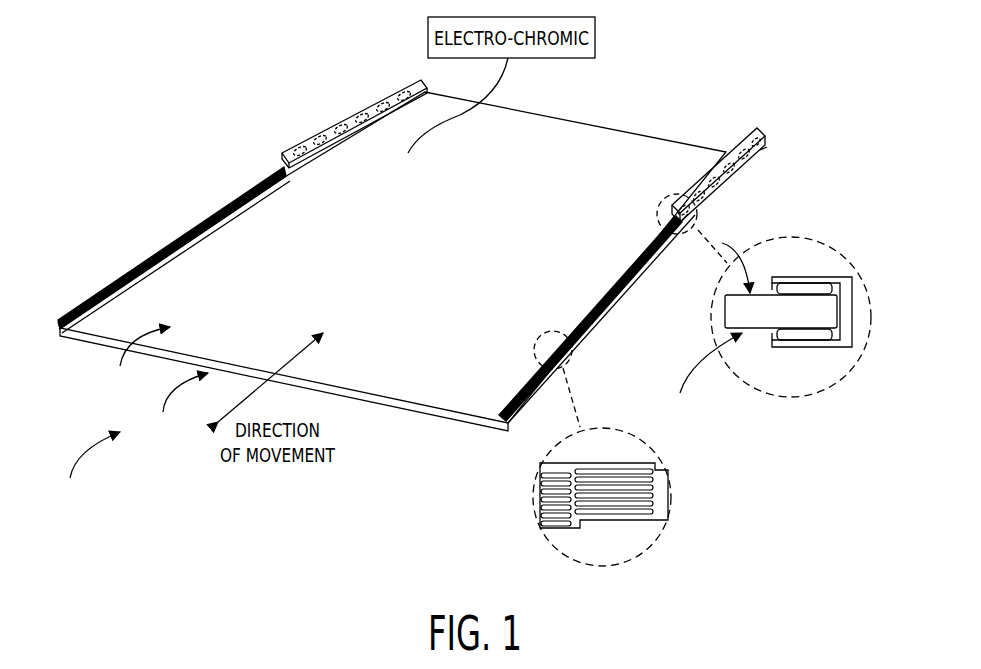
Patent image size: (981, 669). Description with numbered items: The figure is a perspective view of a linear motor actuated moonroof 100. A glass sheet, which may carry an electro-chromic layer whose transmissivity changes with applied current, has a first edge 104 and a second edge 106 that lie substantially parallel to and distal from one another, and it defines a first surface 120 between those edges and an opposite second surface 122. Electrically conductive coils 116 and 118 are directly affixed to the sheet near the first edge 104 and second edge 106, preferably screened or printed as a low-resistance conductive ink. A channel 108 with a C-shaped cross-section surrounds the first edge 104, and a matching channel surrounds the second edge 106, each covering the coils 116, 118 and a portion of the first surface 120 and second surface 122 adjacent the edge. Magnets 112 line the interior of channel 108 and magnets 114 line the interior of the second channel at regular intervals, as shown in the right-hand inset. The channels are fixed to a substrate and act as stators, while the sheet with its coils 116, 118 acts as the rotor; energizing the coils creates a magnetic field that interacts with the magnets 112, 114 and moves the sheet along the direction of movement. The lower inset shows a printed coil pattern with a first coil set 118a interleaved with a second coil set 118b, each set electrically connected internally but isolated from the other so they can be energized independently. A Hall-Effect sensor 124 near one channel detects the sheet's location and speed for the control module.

The moonroof 100 is at (89, 469).
The first edge 104 is at (140, 270).
The second edge 106 is at (610, 312).
The channel 108 is at (308, 142).
The magnets 112 is at (395, 92).
The magnets 114 is at (735, 135).
The electrically conductive coils 116 is at (93, 302).
The electrically conductive coils 118 is at (785, 288).
The first coil set 118a is at (617, 488).
The second coil set 118b is at (555, 497).
The first surface 120 is at (427, 306).
The second surface 122 is at (444, 389).
The Hall-Effect sensor 124 is at (767, 147).